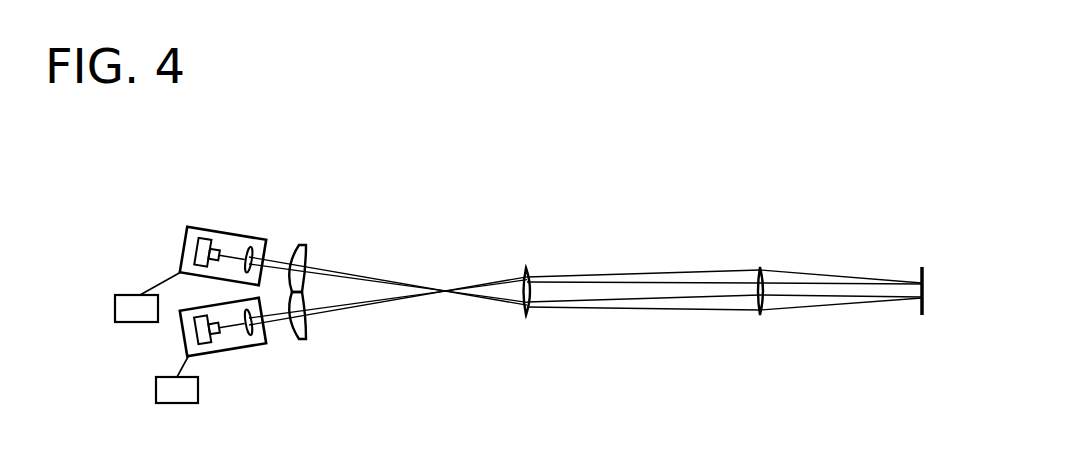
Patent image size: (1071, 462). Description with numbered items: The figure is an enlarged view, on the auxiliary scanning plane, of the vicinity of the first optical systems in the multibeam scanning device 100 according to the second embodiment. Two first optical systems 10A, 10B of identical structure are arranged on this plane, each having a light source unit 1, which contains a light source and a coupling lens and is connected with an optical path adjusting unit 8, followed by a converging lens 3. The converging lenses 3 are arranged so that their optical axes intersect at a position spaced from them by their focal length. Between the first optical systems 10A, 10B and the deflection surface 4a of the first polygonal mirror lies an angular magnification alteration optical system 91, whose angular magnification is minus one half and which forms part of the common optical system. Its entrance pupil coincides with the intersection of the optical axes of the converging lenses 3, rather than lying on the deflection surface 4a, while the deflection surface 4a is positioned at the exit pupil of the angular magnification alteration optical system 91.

The multibeam scanning device 100 is at (553, 192).
The light source unit 1 is at (218, 226).
The converging lens 3 is at (305, 253).
The optical path adjusting unit 8 is at (130, 322).
The first optical system 10A is at (279, 217).
The first optical system 10B is at (296, 359).
The angular magnification alteration optical system 91 is at (777, 326).
The deflection surface 4a is at (921, 306).